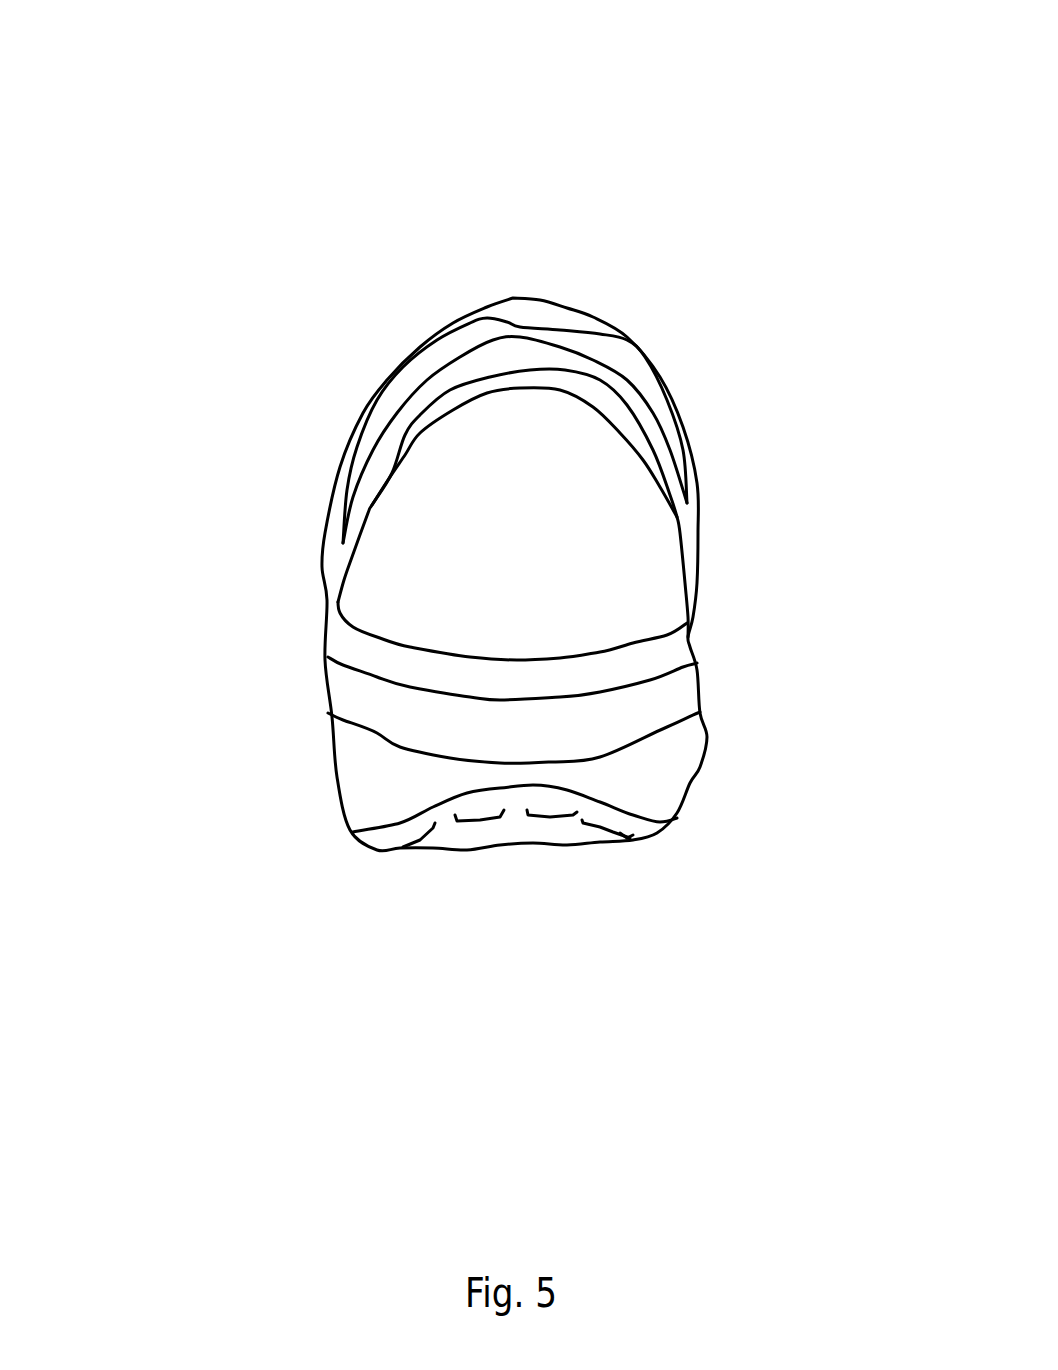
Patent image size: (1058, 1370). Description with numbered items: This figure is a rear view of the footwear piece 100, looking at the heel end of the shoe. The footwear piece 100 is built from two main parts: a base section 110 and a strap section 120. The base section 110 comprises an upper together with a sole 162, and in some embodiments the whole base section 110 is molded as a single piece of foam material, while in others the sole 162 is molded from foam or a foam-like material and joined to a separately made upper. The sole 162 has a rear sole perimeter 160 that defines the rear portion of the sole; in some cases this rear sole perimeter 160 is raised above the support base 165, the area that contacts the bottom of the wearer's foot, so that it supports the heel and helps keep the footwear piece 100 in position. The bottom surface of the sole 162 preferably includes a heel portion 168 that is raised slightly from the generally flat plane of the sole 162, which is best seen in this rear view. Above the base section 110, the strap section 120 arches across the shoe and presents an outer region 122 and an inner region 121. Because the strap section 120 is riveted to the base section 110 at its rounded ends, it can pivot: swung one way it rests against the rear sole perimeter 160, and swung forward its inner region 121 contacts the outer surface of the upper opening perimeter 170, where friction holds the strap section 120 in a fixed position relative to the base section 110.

The footwear piece 100 is at (718, 110).
The base section 110 is at (275, 704).
The strap section 120 is at (548, 286).
The inner region 121 is at (533, 342).
The outer region 122 is at (627, 338).
The rear sole perimeter 160 is at (632, 665).
The sole 162 is at (690, 783).
The support base 165 is at (537, 563).
The heel portion 168 is at (525, 820).
The upper opening perimeter 170 is at (420, 420).